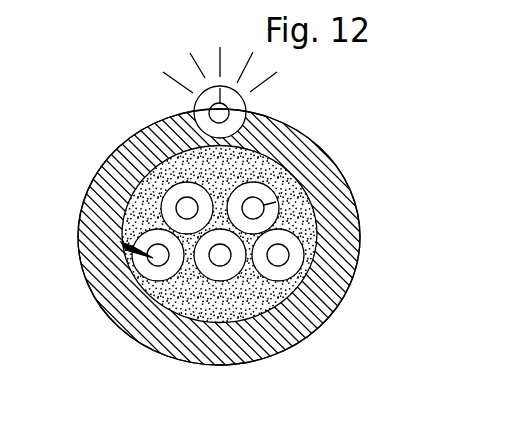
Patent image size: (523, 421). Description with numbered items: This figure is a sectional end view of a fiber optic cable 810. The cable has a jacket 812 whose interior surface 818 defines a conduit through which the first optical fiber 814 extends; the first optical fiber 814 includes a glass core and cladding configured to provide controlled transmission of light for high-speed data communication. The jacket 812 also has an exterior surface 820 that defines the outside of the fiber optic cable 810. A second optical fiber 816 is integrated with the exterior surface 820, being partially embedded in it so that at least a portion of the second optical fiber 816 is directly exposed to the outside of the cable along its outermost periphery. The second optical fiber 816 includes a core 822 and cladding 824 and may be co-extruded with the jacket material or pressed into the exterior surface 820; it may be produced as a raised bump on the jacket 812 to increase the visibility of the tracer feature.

The fiber optic cable 810 is at (58, 108).
The jacket 812 is at (327, 184).
The first optical fiber 814 is at (280, 257).
The second optical fiber 816 is at (250, 112).
The interior surface 818 is at (150, 256).
The exterior surface 820 is at (112, 329).
The core 822 is at (196, 108).
The cladding 824 is at (220, 88).